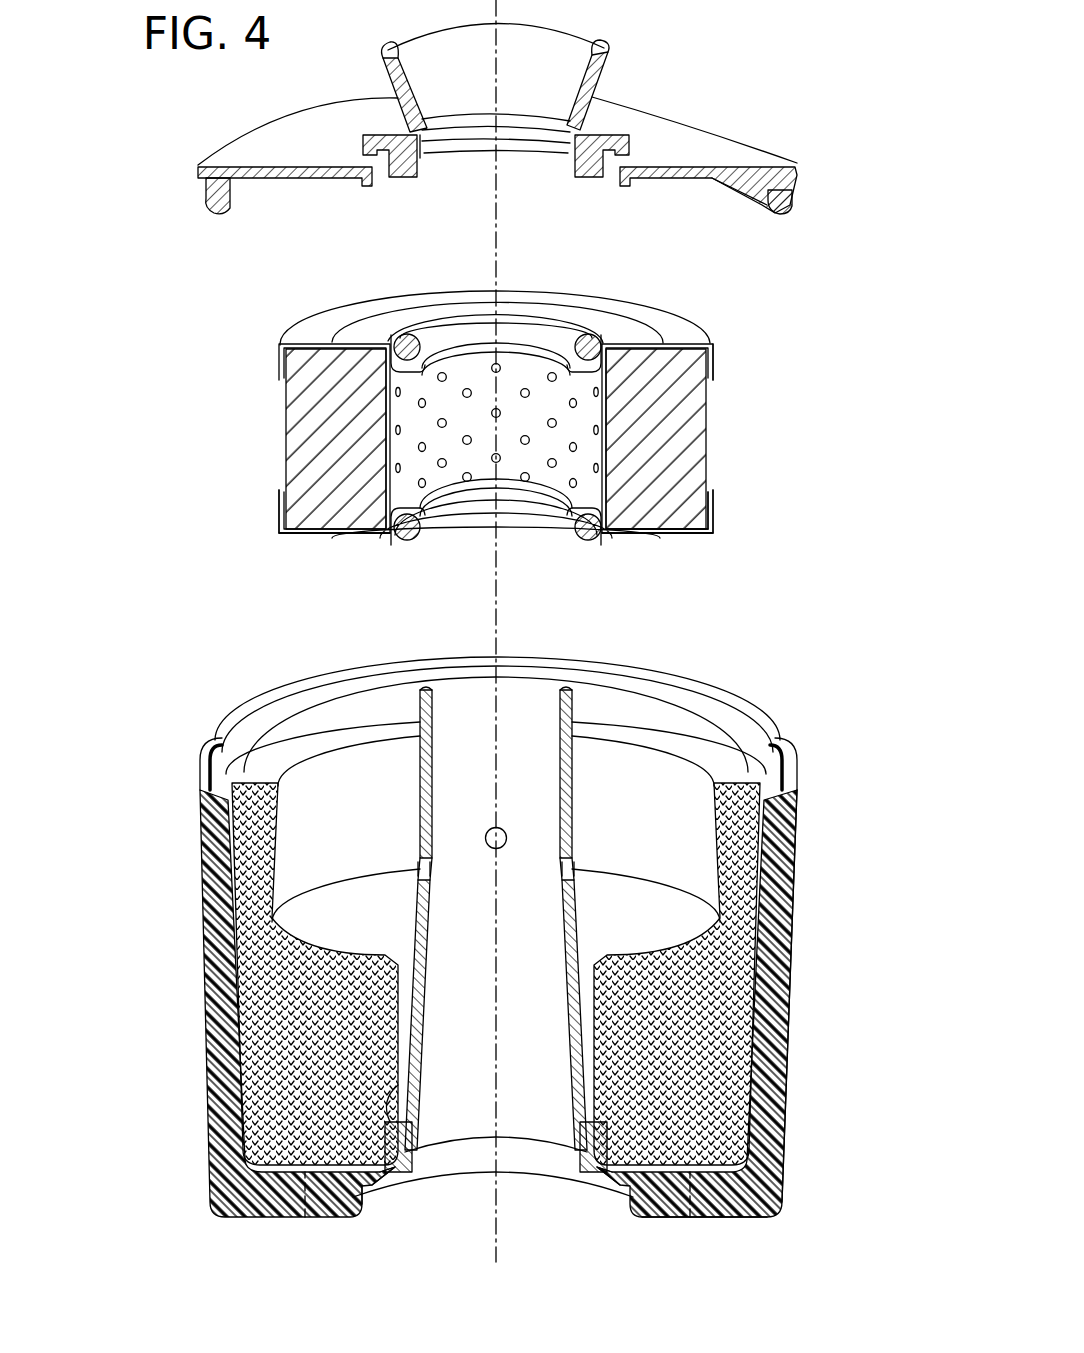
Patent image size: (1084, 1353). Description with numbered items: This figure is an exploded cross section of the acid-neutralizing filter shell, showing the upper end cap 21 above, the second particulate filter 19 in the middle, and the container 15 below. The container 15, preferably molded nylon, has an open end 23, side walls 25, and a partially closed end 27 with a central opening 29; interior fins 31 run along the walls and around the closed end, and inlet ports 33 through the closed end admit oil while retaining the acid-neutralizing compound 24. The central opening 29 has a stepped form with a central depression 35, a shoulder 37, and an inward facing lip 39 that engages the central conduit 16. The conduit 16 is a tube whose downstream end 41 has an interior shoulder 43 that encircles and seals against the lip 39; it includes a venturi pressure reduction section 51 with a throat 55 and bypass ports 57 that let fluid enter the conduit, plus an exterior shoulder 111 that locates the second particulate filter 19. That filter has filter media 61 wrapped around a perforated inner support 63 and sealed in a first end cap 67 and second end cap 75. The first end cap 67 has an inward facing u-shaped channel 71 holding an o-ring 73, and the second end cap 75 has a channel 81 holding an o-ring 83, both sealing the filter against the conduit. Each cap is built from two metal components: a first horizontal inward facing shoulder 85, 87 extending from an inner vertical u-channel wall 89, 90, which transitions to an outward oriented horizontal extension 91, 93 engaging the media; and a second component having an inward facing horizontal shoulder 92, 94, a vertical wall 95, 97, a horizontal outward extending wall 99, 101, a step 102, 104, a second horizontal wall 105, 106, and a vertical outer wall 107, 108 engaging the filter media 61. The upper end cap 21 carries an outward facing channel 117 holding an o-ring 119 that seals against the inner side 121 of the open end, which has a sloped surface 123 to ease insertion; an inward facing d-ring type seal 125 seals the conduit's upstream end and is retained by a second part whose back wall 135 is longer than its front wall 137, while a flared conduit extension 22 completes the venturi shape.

The container 15 is at (205, 1050).
The central conduit 16 is at (578, 779).
The second particulate filter 19 is at (805, 408).
The end cap 21 is at (755, 138).
The flared conduit extension 22 is at (387, 56).
The open end 23 is at (757, 720).
The acid-neutralizing compound 24 is at (733, 1034).
The side walls 25 is at (798, 829).
The partially closed end 27 is at (651, 1216).
The central opening 29 is at (508, 1222).
The interior fins 31 is at (792, 973).
The inlet ports 33 is at (312, 1220).
The central depression 35 is at (365, 1196).
The shoulder 37 is at (380, 1182).
The inward facing lip 39 is at (427, 690).
The downstream end 41 is at (395, 1086).
The interior shoulder 43 is at (587, 1133).
The pressure reduction section 51 is at (540, 912).
The throat 55 is at (420, 902).
The bypass ports 57 is at (491, 829).
The filter media 61 is at (290, 425).
The perforated inner support 63 is at (510, 375).
The first end cap 67 is at (700, 536).
The inward facing u-shaped channel 71 is at (558, 518).
The o-ring 73 is at (403, 546).
The second end cap 75 is at (697, 335).
The inward facing u-shaped channel 81 is at (440, 342).
The o-ring 83 is at (578, 335).
The first horizontal inward facing shoulder 85 is at (437, 500).
The first horizontal inward facing shoulder 87 is at (602, 403).
The inner vertical u-channel wall 89 is at (390, 522).
The inner vertical u-channel wall 90 is at (288, 373).
The outward oriented horizontal extension 91 is at (371, 538).
The inward facing horizontal shoulder 92 is at (572, 542).
The outward oriented horizontal extension 93 is at (645, 340).
The inward facing horizontal shoulder 94 is at (424, 330).
The vertical wall 95 is at (603, 534).
The vertical wall 97 is at (643, 338).
The horizontal outward extending wall 99 is at (653, 538).
The horizontal outward extending wall 101 is at (360, 330).
The step 102 is at (665, 534).
The step 104 is at (333, 340).
The second horizontal wall 105 is at (297, 538).
The second horizontal wall 106 is at (297, 336).
The vertical outer wall 107 is at (718, 506).
The vertical outer wall 108 is at (718, 358).
The exterior shoulder 111 is at (418, 928).
The outward facing channel 117 is at (755, 178).
The o-ring 119 is at (206, 200).
The inner side 121 is at (227, 740).
The sloped surface 123 is at (237, 705).
The d-ring type seal 125 is at (433, 158).
The back wall 135 is at (374, 178).
The front wall 137 is at (580, 168).